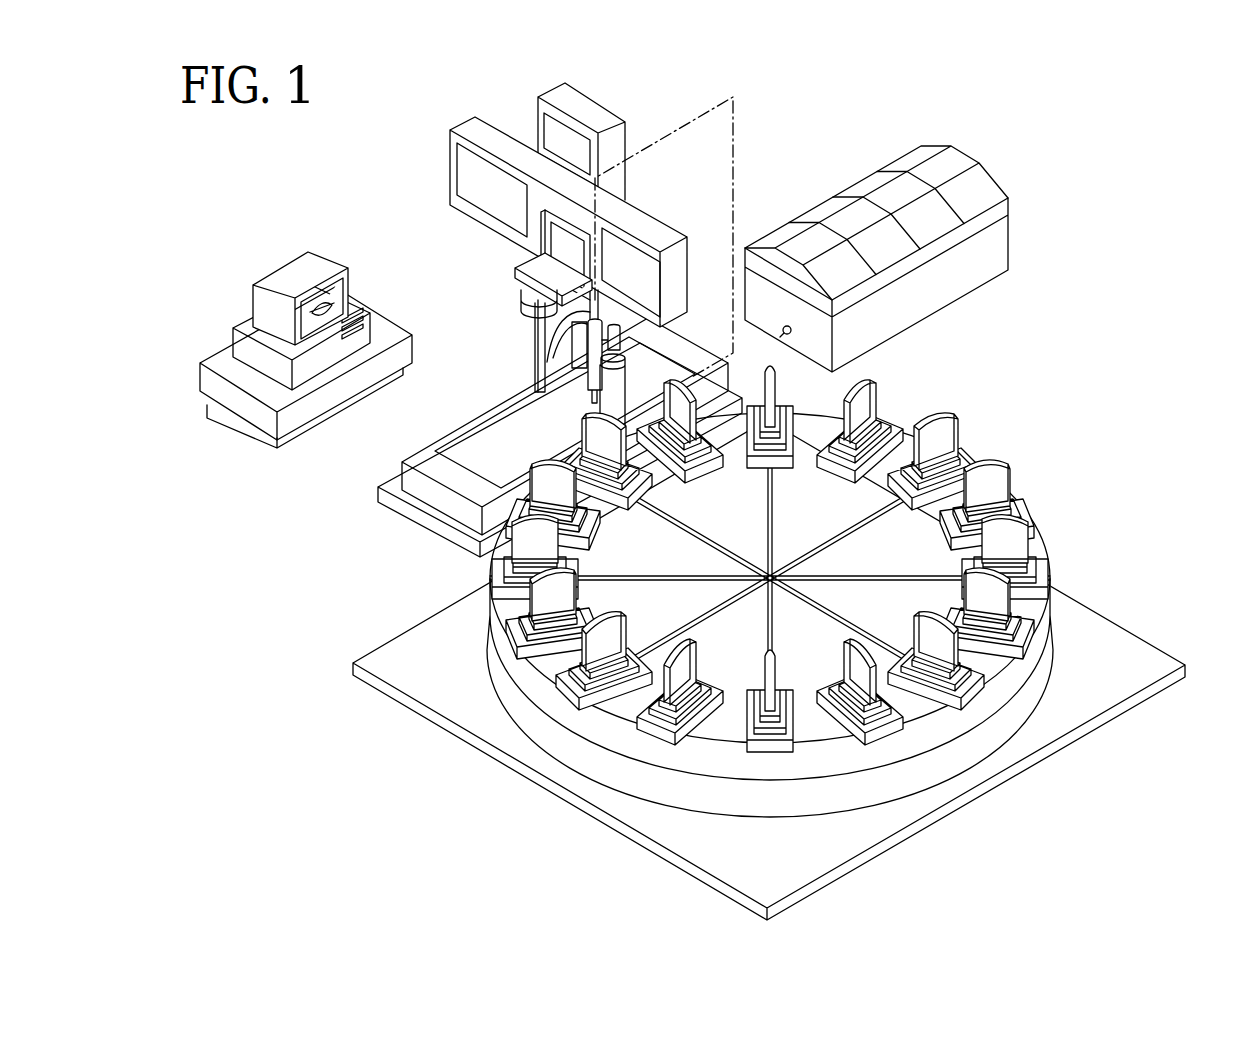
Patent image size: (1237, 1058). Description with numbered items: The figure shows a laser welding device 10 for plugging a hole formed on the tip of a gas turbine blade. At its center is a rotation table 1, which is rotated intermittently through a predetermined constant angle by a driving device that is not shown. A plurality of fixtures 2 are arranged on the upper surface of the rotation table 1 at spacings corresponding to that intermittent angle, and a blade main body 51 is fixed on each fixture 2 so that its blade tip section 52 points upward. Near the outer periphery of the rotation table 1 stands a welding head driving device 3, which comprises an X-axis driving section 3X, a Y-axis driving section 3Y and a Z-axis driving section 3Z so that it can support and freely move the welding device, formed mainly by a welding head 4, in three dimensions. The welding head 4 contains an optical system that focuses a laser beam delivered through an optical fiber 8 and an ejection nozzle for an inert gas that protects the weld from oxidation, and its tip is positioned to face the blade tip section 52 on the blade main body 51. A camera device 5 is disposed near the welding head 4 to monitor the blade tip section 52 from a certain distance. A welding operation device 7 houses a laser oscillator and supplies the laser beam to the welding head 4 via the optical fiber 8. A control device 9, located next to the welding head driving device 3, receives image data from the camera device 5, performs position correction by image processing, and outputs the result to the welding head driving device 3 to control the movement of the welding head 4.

The rotation table 1 is at (832, 400).
The fixture 2 is at (900, 443).
The welding head driving device 3 is at (538, 323).
The X-axis driving section 3X is at (408, 476).
The Y-axis driving section 3Y is at (473, 121).
The Z-axis driving section 3Z is at (583, 101).
The welding head 4 is at (592, 380).
The camera device 5 is at (613, 328).
The welding operation device 7 is at (993, 268).
The optical fiber 8 is at (738, 142).
The control device 9 is at (253, 300).
The laser welding device 10 is at (1005, 135).
The blade main body 51 is at (610, 453).
The blade tip section 52 is at (587, 426).